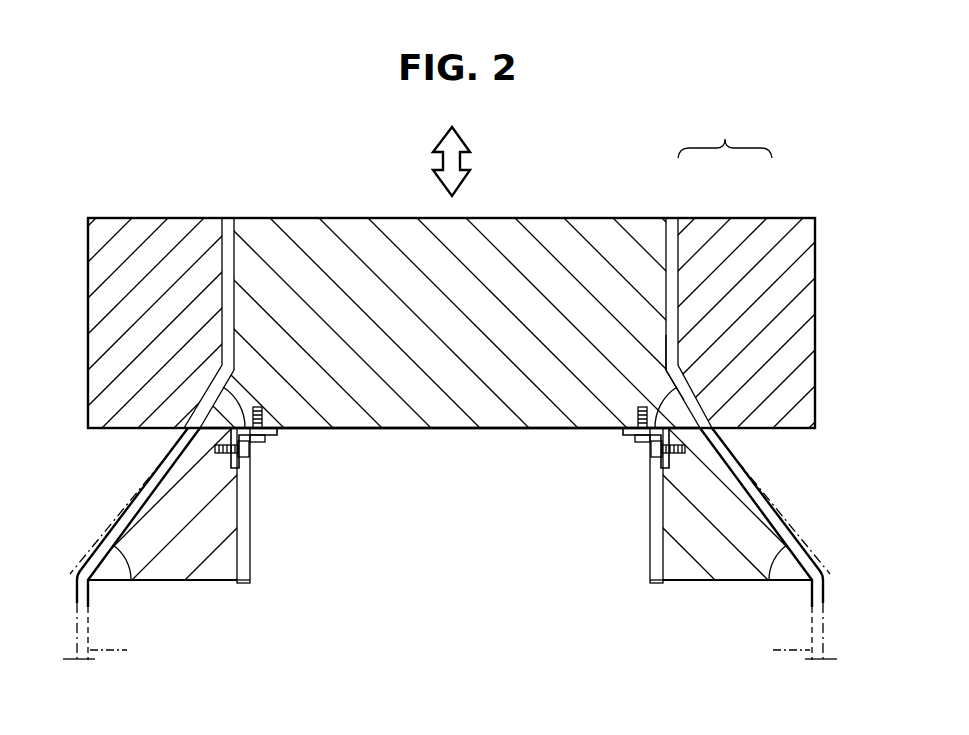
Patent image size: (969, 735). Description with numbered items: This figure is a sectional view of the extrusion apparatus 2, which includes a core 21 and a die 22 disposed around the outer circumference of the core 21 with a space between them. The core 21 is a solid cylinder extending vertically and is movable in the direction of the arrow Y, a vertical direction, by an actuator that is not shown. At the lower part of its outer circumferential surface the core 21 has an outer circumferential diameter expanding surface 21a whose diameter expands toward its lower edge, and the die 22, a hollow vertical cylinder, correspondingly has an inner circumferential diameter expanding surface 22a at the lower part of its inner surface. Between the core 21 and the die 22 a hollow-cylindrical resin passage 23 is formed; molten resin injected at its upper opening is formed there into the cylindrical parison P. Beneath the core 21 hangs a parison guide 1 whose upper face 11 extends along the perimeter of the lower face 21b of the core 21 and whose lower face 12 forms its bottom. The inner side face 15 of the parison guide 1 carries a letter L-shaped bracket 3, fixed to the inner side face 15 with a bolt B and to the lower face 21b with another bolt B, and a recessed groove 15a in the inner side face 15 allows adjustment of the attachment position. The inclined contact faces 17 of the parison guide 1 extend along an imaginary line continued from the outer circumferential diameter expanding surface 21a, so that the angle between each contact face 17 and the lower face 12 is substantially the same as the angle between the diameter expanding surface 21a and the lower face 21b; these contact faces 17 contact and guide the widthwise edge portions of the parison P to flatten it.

The parison guide 1 is at (214, 582).
The extrusion apparatus 2 is at (725, 135).
The letter L-shaped bracket 3 is at (272, 436).
The upper face 11 is at (218, 420).
The lower face 12 is at (190, 582).
The inner side face 15 is at (250, 514).
The recessed groove 15a is at (250, 552).
The contact face 17 is at (142, 512).
The core 21 is at (613, 218).
The outer circumferential diameter expanding surface 21a is at (680, 367).
The lower face of the core 21b is at (452, 430).
The die 22 is at (748, 218).
The inner circumferential diameter expanding surface 22a is at (666, 368).
The resin passage 23 is at (228, 240).
The bolt B is at (255, 455).
The parison P is at (450, 652).
The arrow Y (vertical direction) Y is at (462, 137).